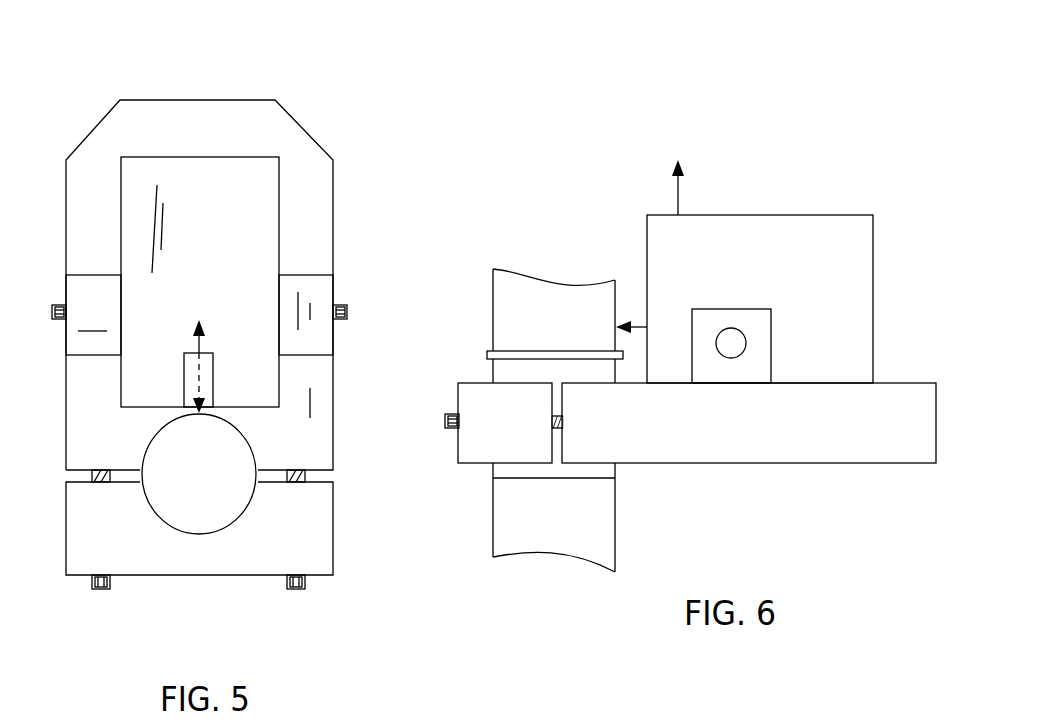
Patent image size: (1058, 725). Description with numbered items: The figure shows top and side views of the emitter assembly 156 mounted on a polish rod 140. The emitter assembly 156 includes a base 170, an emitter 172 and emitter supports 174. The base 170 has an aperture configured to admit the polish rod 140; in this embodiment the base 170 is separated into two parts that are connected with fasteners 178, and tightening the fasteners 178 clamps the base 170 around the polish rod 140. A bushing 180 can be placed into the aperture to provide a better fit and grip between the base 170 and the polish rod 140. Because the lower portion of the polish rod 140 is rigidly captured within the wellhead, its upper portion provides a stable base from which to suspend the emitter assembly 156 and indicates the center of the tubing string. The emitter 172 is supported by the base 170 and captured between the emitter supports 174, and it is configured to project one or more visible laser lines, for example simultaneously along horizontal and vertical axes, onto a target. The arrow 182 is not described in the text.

In FIG. 6, the polish rod 140 is at (544, 313).
In FIG. 5, the emitter assembly 156 is at (83, 96).
In FIG. 6, the emitter assembly 156 is at (587, 190).
In FIG. 5, the base 170 is at (245, 367).
In FIG. 6, the base 170 is at (675, 472).
In FIG. 5, the emitter 172 is at (255, 218).
In FIG. 6, the emitter 172 is at (737, 240).
In FIG. 5, the emitter supports 174 is at (96, 295).
In FIG. 6, the emitter supports 174 is at (765, 365).
In FIG. 5, the fasteners 178 is at (111, 580).
In FIG. 6, the fasteners 178 is at (445, 427).
In FIG. 6, the bushing 180 is at (512, 368).
In FIG. 6, the direction arrow / assembly 182 is at (478, 724).